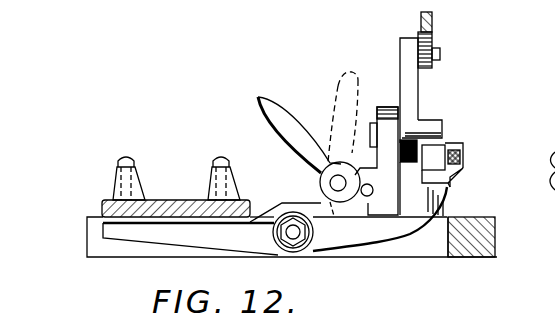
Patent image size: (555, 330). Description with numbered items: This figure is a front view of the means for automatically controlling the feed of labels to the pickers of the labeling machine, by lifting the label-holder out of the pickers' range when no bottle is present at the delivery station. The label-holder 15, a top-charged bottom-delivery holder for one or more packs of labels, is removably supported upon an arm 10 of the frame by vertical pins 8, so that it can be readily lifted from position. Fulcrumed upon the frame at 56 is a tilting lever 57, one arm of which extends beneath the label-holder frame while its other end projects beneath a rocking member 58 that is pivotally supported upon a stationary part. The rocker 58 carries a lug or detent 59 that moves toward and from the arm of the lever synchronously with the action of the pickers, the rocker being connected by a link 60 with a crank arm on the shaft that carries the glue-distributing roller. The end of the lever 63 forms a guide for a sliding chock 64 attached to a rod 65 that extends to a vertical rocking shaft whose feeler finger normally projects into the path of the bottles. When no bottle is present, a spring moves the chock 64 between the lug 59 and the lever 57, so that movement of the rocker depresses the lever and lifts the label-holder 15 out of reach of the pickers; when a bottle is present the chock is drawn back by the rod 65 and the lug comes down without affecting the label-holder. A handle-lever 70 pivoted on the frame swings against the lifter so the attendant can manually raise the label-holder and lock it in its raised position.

The vertical pins 8 is at (127, 157).
The arm of the frame 10 is at (103, 247).
The label-holder 15 is at (173, 207).
The fulcrum 56 is at (293, 232).
The tilting lever 57 is at (183, 231).
The rocking member 58 is at (410, 70).
The lug or detent 59 is at (428, 126).
The link 60 is at (432, 31).
The end of the lever 63 is at (442, 178).
The sliding chock 64 is at (432, 157).
The rod 65 is at (463, 155).
The handle-lever 70 is at (293, 128).